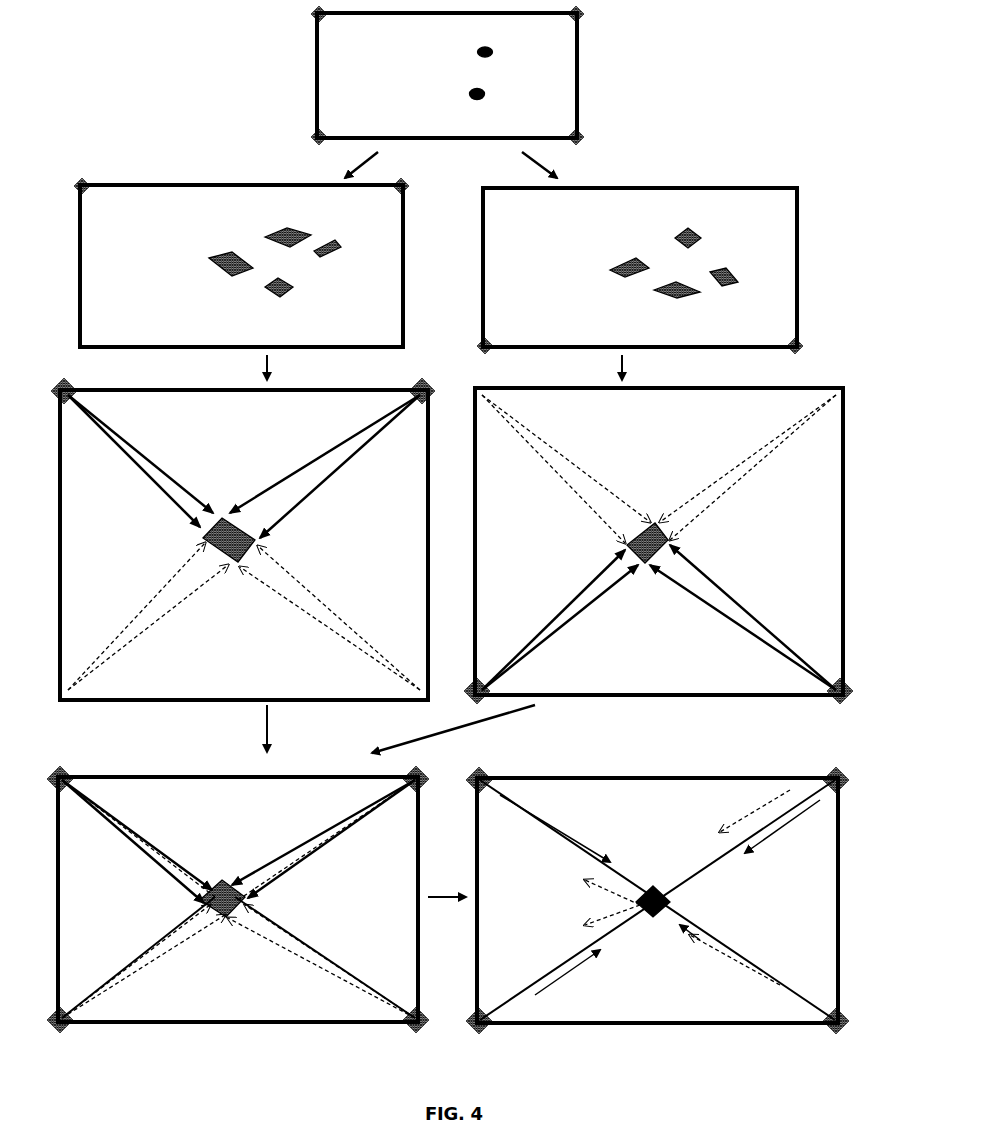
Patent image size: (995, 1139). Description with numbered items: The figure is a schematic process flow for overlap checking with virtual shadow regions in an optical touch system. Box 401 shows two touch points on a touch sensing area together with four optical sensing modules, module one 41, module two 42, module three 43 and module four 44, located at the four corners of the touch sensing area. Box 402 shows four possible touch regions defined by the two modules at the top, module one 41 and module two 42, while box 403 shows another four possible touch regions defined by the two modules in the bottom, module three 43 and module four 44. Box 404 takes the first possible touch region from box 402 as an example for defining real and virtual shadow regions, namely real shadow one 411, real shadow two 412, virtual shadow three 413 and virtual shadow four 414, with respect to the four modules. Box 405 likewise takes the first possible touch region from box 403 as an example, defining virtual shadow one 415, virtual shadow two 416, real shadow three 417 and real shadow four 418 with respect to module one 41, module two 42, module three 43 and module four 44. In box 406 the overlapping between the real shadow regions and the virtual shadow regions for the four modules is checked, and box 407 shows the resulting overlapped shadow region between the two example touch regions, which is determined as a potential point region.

The module 1 41 is at (243, 11).
The module 2 42 is at (650, 13).
The module 3 43 is at (242, 134).
The module 4 44 is at (650, 134).
The box 401 is at (445, 73).
The box 402 is at (186, 185).
The box 403 is at (708, 188).
The box 404 is at (243, 561).
The box 405 is at (658, 566).
The box 406 is at (203, 1030).
The box 407 is at (668, 1030).
The real shadow 1 411 is at (155, 461).
The real shadow 2 412 is at (314, 466).
The virtual shadow 3 413 is at (163, 616).
The virtual shadow 4 414 is at (305, 618).
The virtual shadow 1 415 is at (577, 469).
The virtual shadow 2 416 is at (724, 467).
The real shadow 3 417 is at (565, 620).
The real shadow 4 418 is at (719, 617).